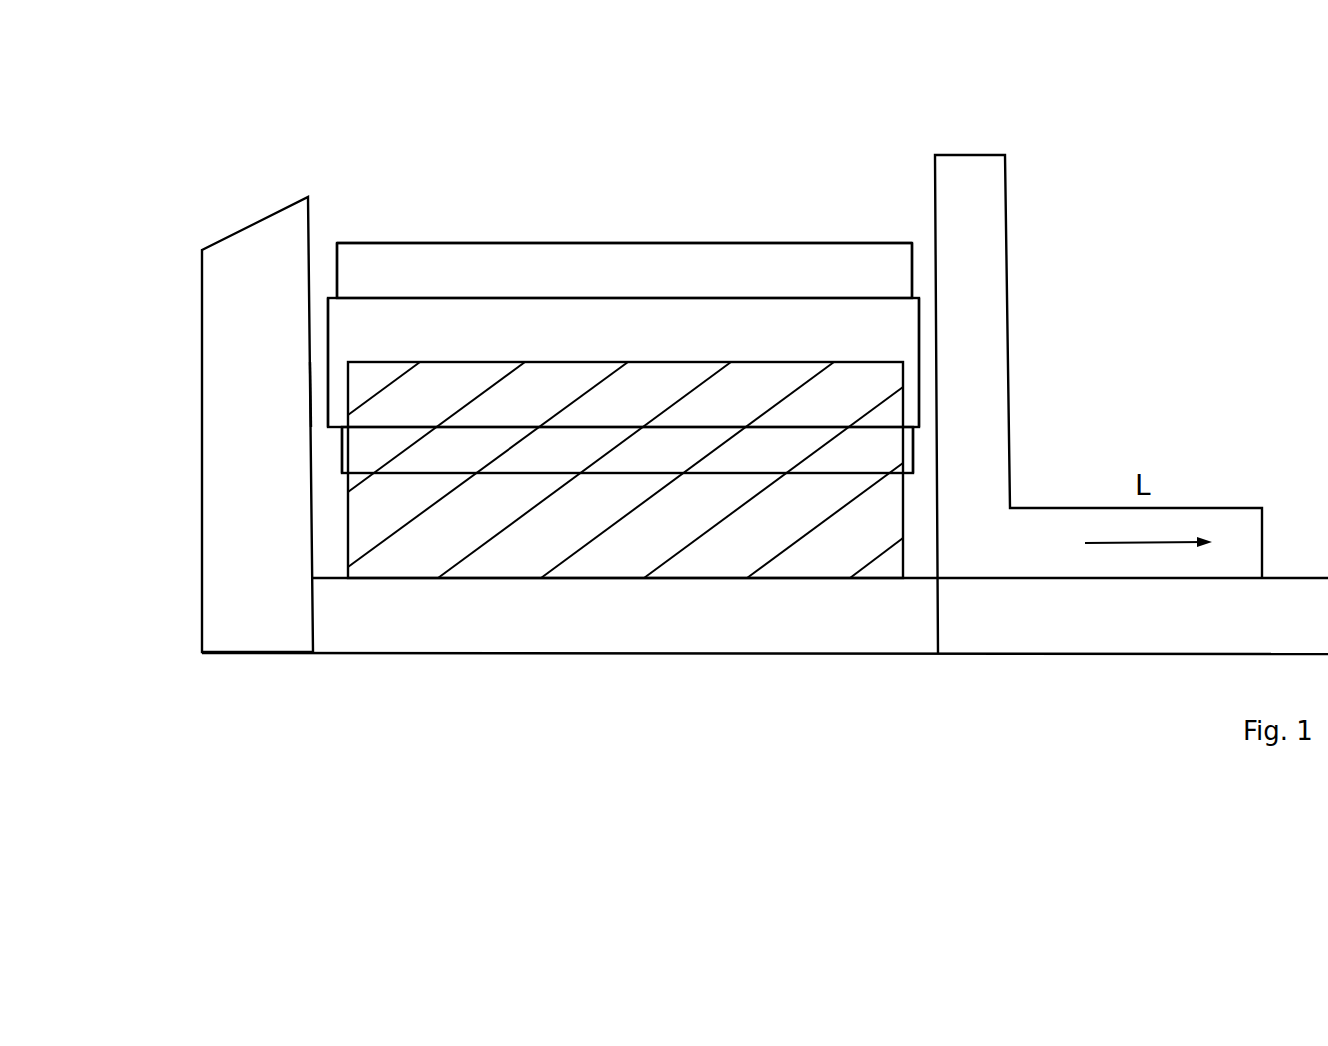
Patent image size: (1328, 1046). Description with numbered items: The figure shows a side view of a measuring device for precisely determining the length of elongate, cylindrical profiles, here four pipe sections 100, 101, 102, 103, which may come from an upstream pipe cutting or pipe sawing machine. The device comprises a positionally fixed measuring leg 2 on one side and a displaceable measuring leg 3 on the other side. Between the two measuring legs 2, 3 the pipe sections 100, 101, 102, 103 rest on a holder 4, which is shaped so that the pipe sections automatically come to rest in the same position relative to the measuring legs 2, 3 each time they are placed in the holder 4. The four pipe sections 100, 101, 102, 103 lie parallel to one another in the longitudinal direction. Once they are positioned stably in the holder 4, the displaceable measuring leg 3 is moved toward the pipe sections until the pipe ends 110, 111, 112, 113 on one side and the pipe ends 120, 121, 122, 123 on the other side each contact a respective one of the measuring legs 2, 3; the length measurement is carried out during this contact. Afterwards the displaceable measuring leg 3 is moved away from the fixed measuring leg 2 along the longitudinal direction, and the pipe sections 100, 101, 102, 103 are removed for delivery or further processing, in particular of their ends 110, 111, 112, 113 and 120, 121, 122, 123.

The positionally fixed measuring leg 2 is at (250, 468).
The displaceable measuring leg 3 is at (972, 210).
The holder 4 is at (757, 532).
The pipe section 100 is at (624, 270).
The pipe section 101 is at (623, 362).
The pipe section 102 is at (723, 242).
The pipe section 103 is at (627, 470).
The pipe end 110 is at (912, 268).
The pipe end 111 is at (918, 371).
The pipe end 112 is at (928, 322).
The pipe end 113 is at (913, 452).
The pipe end 120 is at (337, 271).
The pipe end 121 is at (330, 346).
The pipe end 122 is at (323, 392).
The pipe end 123 is at (340, 450).